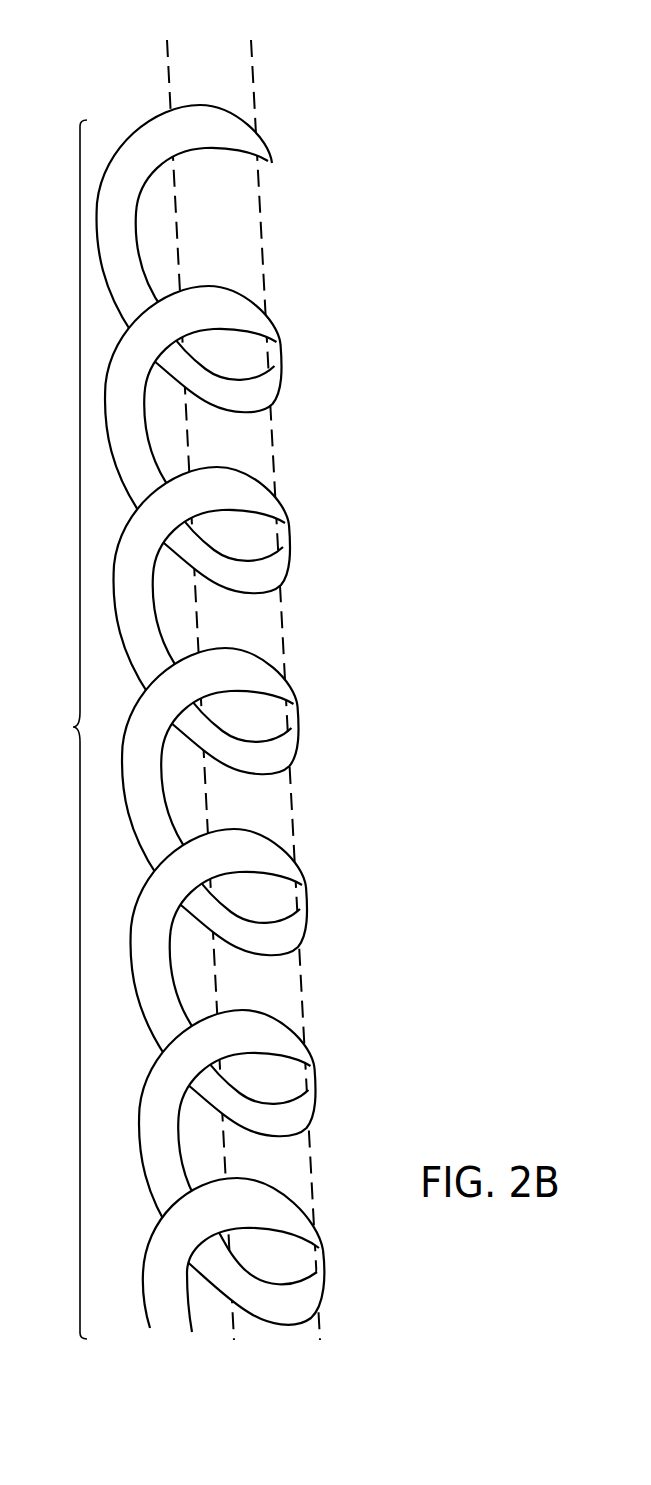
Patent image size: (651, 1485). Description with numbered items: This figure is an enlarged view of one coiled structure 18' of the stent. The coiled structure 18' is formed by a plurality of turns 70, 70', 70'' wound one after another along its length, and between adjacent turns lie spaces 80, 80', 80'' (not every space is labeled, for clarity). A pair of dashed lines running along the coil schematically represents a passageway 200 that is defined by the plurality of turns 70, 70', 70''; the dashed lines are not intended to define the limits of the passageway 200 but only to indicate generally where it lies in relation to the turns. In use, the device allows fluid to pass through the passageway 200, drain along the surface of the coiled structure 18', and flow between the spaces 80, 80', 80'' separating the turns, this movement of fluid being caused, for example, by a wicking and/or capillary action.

The coiled structure 18' is at (178, 725).
The passageway 200 is at (220, 62).
The turn 70 is at (204, 219).
The turn 70' is at (209, 393).
The turn 70'' is at (225, 581).
The space 80 is at (276, 225).
The space 80' is at (291, 413).
The space 80'' is at (305, 595).